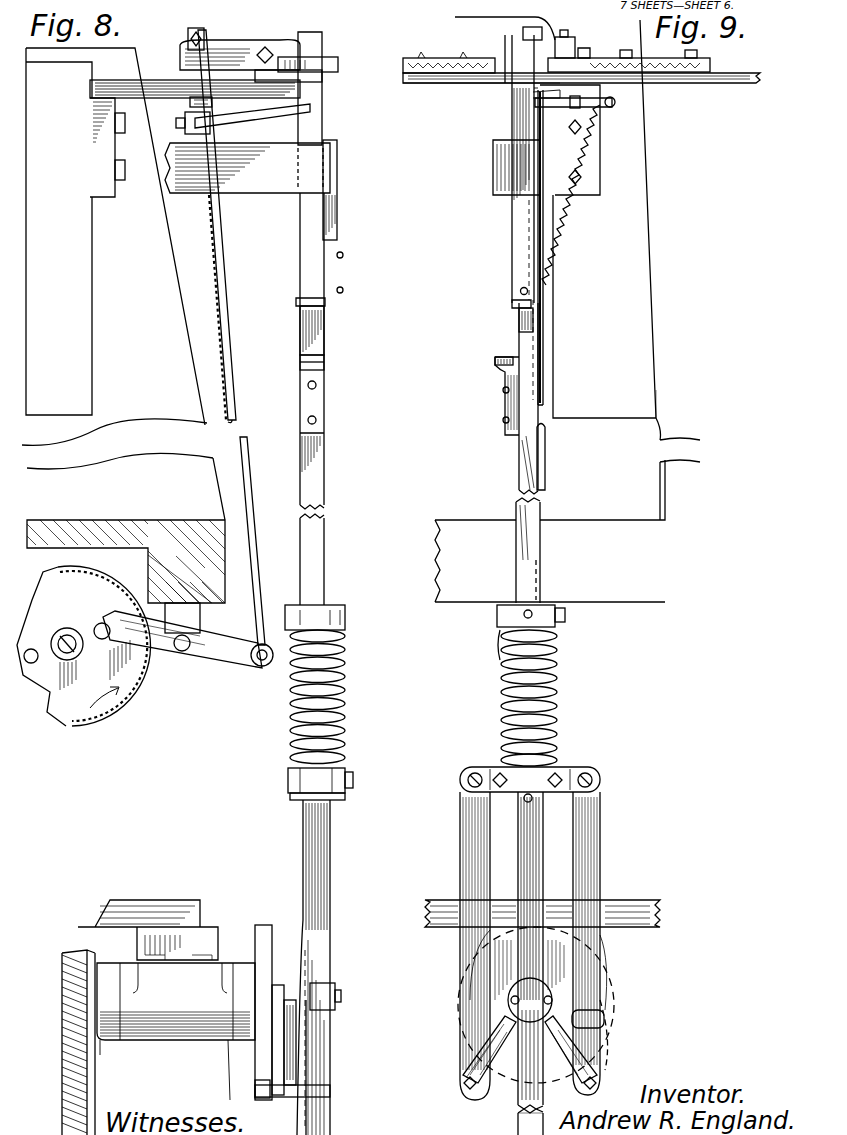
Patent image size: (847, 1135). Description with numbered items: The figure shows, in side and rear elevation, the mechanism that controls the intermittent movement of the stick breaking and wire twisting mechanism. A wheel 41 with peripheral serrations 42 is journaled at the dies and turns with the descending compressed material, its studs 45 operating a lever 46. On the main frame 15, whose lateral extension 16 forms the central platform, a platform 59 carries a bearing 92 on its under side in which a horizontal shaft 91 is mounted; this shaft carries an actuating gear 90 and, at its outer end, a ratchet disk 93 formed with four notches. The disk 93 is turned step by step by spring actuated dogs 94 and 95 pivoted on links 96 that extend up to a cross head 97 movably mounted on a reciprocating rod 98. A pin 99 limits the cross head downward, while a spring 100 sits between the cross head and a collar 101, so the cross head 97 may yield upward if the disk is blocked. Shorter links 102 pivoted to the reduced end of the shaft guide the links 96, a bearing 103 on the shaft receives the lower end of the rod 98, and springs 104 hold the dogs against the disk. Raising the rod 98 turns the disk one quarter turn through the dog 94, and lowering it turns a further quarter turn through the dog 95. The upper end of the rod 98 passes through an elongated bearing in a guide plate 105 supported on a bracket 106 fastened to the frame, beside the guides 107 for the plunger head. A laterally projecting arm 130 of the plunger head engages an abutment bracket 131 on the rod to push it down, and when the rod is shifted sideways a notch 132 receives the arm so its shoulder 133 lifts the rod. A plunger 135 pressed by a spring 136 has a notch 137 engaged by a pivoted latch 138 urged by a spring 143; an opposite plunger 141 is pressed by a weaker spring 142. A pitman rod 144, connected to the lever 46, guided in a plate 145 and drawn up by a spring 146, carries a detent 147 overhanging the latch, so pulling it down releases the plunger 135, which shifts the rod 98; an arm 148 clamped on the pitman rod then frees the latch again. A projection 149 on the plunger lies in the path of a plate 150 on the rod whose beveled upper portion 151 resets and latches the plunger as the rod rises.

In FIG. 8, the main frame 15 is at (126, 545).
In FIG. 9, the main frame 15 is at (657, 392).
In FIG. 8, the lateral extension 16 is at (252, 550).
In FIG. 9, the lateral extension 16 is at (550, 531).
In FIG. 8, the wheel 41 is at (88, 715).
In FIG. 9, the wheel 41 is at (540, 580).
In FIG. 8, the serrations 42 is at (130, 695).
In FIG. 8, the studs 45 is at (100, 623).
In FIG. 8, the lever 46 is at (221, 652).
In FIG. 9, the lever 46 is at (500, 645).
In FIG. 8, the platform 59 is at (120, 900).
In FIG. 9, the platform 59 is at (437, 910).
In FIG. 8, the actuating gear 90 is at (96, 1077).
In FIG. 9, the horizontal shaft 91 is at (600, 993).
In FIG. 8, the bearing 92 is at (203, 1022).
In FIG. 8, the ratchet disk 93 is at (263, 928).
In FIG. 9, the ratchet disk 93 is at (562, 972).
In FIG. 8, the dog 94 is at (278, 985).
In FIG. 9, the dog 94 is at (608, 1046).
In FIG. 8, the dog 95 is at (265, 1098).
In FIG. 9, the dog 95 is at (506, 1121).
In FIG. 8, the links 96 is at (302, 960).
In FIG. 9, the links 96 is at (590, 880).
In FIG. 8, the cross head 97 is at (340, 768).
In FIG. 9, the cross head 97 is at (560, 776).
In FIG. 8, the reciprocating rod 98 is at (318, 570).
In FIG. 9, the reciprocating rod 98 is at (545, 836).
In FIG. 8, the pin 99 is at (338, 797).
In FIG. 9, the pin 99 is at (548, 801).
In FIG. 8, the spring 100 is at (295, 722).
In FIG. 9, the spring 100 is at (560, 690).
In FIG. 8, the collar 101 is at (345, 610).
In FIG. 9, the collar 101 is at (497, 614).
In FIG. 8, the shorter links 102 is at (287, 1033).
In FIG. 9, the shorter links 102 is at (490, 1041).
In FIG. 8, the bearing 103 is at (327, 995).
In FIG. 9, the bearing 103 is at (508, 998).
In FIG. 9, the springs 104 is at (605, 1017).
In FIG. 8, the guide plate 105 is at (328, 80).
In FIG. 9, the guide plate 105 is at (480, 82).
In FIG. 8, the bracket 106 is at (132, 86).
In FIG. 9, the bracket 106 is at (596, 170).
In FIG. 8, the guides 107 is at (117, 258).
In FIG. 9, the guides 107 is at (626, 270).
In FIG. 8, the laterally projecting arm 130 is at (247, 168).
In FIG. 9, the laterally projecting arm 130 is at (500, 186).
In FIG. 8, the abutment bracket 131 is at (322, 364).
In FIG. 9, the abutment bracket 131 is at (500, 360).
In FIG. 8, the notch 132 is at (322, 325).
In FIG. 9, the notch 132 is at (518, 324).
In FIG. 8, the shoulder 133 is at (300, 303).
In FIG. 9, the shoulder 133 is at (512, 304).
In FIG. 9, the plunger 135 is at (640, 88).
In FIG. 9, the spring 136 is at (705, 56).
In FIG. 9, the notch 137 is at (592, 58).
In FIG. 8, the pivoted latch 138 is at (240, 55).
In FIG. 9, the pivoted latch 138 is at (560, 40).
In FIG. 9, the plunger 141 is at (512, 65).
In FIG. 9, the spring 142 is at (440, 57).
In FIG. 8, the spring 143 is at (182, 75).
In FIG. 8, the pitman rod 144 is at (232, 358).
In FIG. 9, the pitman rod 144 is at (548, 440).
In FIG. 8, the plate 145 is at (192, 102).
In FIG. 9, the plate 145 is at (614, 106).
In FIG. 8, the spring 146 is at (222, 232).
In FIG. 9, the spring 146 is at (567, 226).
In FIG. 8, the detent 147 is at (215, 27).
In FIG. 9, the detent 147 is at (482, 25).
In FIG. 8, the arm 148 is at (300, 125).
In FIG. 9, the arm 148 is at (510, 110).
In FIG. 8, the projection 149 is at (335, 65).
In FIG. 9, the projection 149 is at (510, 88).
In FIG. 8, the plate 150 is at (340, 215).
In FIG. 9, the plate 150 is at (527, 206).
In FIG. 9, the beveled portion 151 is at (540, 186).